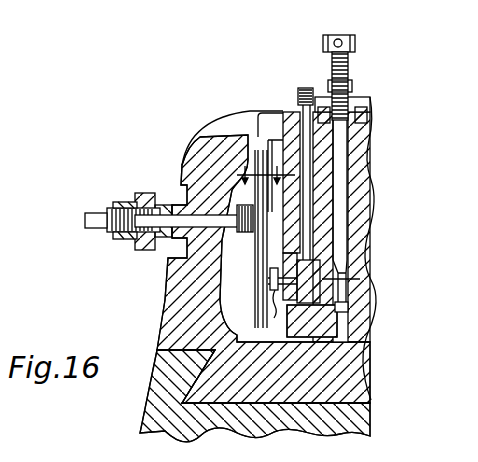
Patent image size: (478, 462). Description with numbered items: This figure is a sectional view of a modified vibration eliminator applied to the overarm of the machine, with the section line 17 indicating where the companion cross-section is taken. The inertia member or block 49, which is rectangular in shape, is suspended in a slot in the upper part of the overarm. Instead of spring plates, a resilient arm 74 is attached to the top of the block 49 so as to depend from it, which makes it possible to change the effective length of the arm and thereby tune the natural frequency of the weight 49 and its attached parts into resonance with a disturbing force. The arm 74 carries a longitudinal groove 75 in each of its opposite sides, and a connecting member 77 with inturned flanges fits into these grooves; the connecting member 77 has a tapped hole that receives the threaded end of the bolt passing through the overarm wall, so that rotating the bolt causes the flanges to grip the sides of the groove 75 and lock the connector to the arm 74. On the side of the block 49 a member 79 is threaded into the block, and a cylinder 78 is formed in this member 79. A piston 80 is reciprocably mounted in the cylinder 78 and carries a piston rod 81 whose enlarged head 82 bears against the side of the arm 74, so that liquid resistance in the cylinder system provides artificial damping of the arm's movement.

The section line 17- 17 is at (266, 184).
The inertia member 49 is at (300, 103).
The resilient arm 74 is at (257, 126).
The longitudinal groove 75 is at (256, 268).
The connecting member 77 is at (246, 237).
The cylinder 78 is at (291, 262).
The threaded member 79 is at (289, 325).
The piston 80 is at (316, 272).
The piston rod 81 is at (276, 266).
The enlarged head 82 is at (276, 312).